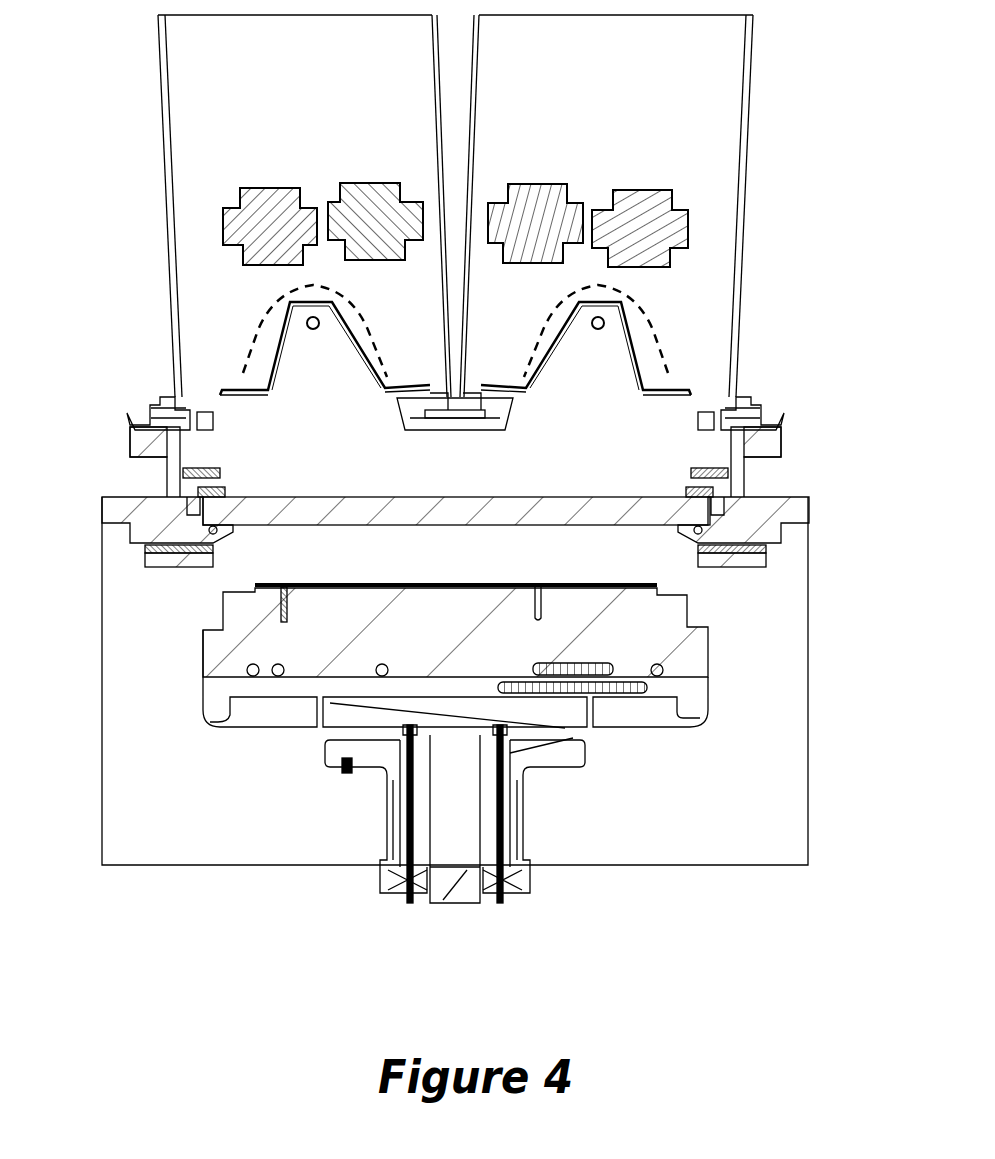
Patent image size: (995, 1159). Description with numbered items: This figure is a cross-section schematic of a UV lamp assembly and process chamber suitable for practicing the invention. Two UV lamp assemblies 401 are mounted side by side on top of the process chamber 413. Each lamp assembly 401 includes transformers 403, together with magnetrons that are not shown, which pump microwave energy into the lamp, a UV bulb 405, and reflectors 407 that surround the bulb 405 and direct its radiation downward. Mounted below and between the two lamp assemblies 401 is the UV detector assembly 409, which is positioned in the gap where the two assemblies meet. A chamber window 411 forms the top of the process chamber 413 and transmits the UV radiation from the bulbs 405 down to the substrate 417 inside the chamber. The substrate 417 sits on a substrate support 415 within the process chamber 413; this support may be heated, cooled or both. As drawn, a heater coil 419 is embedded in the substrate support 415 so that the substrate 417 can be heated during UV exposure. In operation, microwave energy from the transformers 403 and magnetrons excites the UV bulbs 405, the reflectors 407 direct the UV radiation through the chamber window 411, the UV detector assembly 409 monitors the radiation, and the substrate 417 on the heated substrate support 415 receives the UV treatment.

The UV lamp assembly 401 is at (707, 88).
The transformer 403 is at (657, 228).
The UV bulb 405 is at (600, 313).
The reflector 407 is at (637, 353).
The UV detector assembly 409 is at (497, 418).
The chamber window 411 is at (660, 505).
The process chamber 413 is at (760, 812).
The substrate support 415 is at (590, 623).
The substrate 417 is at (283, 612).
The heater coil 419 is at (278, 673).